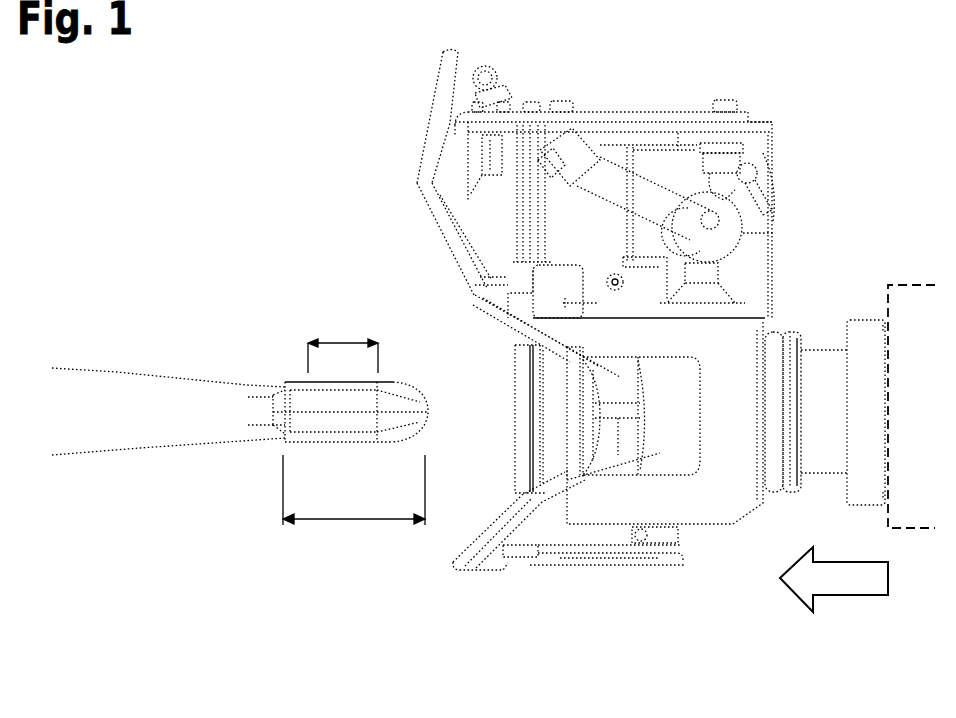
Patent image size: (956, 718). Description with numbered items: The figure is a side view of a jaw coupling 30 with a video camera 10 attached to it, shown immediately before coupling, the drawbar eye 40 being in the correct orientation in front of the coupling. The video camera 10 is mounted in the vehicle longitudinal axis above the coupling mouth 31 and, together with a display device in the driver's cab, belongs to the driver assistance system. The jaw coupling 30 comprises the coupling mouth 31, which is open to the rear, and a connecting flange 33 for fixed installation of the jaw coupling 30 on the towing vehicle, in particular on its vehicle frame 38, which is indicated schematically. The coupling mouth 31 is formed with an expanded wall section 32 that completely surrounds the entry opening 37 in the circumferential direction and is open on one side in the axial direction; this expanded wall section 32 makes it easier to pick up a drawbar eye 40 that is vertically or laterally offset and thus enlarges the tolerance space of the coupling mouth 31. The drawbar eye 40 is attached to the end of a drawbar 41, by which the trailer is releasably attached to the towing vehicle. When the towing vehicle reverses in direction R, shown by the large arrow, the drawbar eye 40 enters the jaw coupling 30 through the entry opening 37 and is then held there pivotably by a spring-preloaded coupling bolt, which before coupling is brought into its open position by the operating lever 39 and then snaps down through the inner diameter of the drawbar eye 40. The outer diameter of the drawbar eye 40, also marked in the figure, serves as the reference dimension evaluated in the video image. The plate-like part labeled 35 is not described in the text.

The video camera 10 is at (470, 197).
The jaw coupling 30 is at (690, 537).
The coupling mouth 31 is at (593, 477).
The expanded wall section 32 is at (477, 537).
The connecting flange 33 is at (867, 320).
The slanted cover plate 35 is at (425, 208).
The entry opening 37 is at (510, 416).
The vehicle frame 38 is at (912, 285).
The operating lever 39 is at (630, 188).
The drawbar eye 40 is at (407, 386).
The drawbar 41 is at (119, 370).
The direction of reversing travel R is at (860, 595).